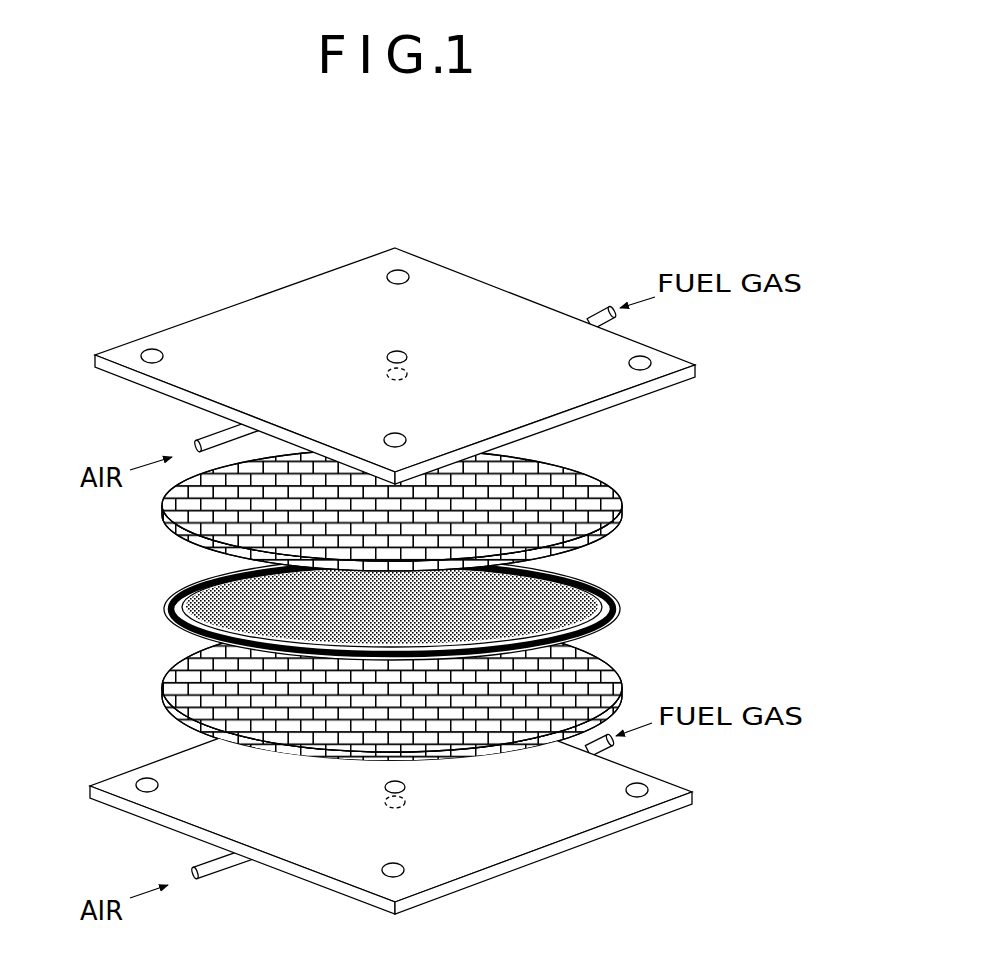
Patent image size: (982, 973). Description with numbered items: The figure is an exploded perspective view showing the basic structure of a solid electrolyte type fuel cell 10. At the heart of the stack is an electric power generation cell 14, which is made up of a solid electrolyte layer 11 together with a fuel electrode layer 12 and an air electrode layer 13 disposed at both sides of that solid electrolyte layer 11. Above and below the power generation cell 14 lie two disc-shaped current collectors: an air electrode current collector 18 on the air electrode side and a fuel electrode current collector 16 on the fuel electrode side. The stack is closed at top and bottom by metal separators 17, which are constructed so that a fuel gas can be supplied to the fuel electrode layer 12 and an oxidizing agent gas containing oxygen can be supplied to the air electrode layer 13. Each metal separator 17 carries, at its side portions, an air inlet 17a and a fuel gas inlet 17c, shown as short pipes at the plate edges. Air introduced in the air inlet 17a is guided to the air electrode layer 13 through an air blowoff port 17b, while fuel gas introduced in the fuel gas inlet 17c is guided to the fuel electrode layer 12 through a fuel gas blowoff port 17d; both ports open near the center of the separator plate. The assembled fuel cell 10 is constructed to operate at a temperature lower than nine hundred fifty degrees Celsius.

The solid electrolyte type fuel cell 10 is at (81, 200).
The solid electrolyte layer 11 is at (614, 604).
The fuel electrode layer 12 is at (688, 573).
The air electrode layer 13 is at (570, 588).
The electric power generation cell 14 is at (449, 609).
The fuel electrode current collector 16 is at (614, 670).
The metal separator 17 is at (650, 393).
The air inlet 17a is at (217, 432).
The air blowoff port 17b is at (393, 370).
The fuel gas inlet 17c is at (600, 311).
The fuel gas blowoff port 17d is at (397, 352).
The air electrode current collector 18 is at (620, 500).